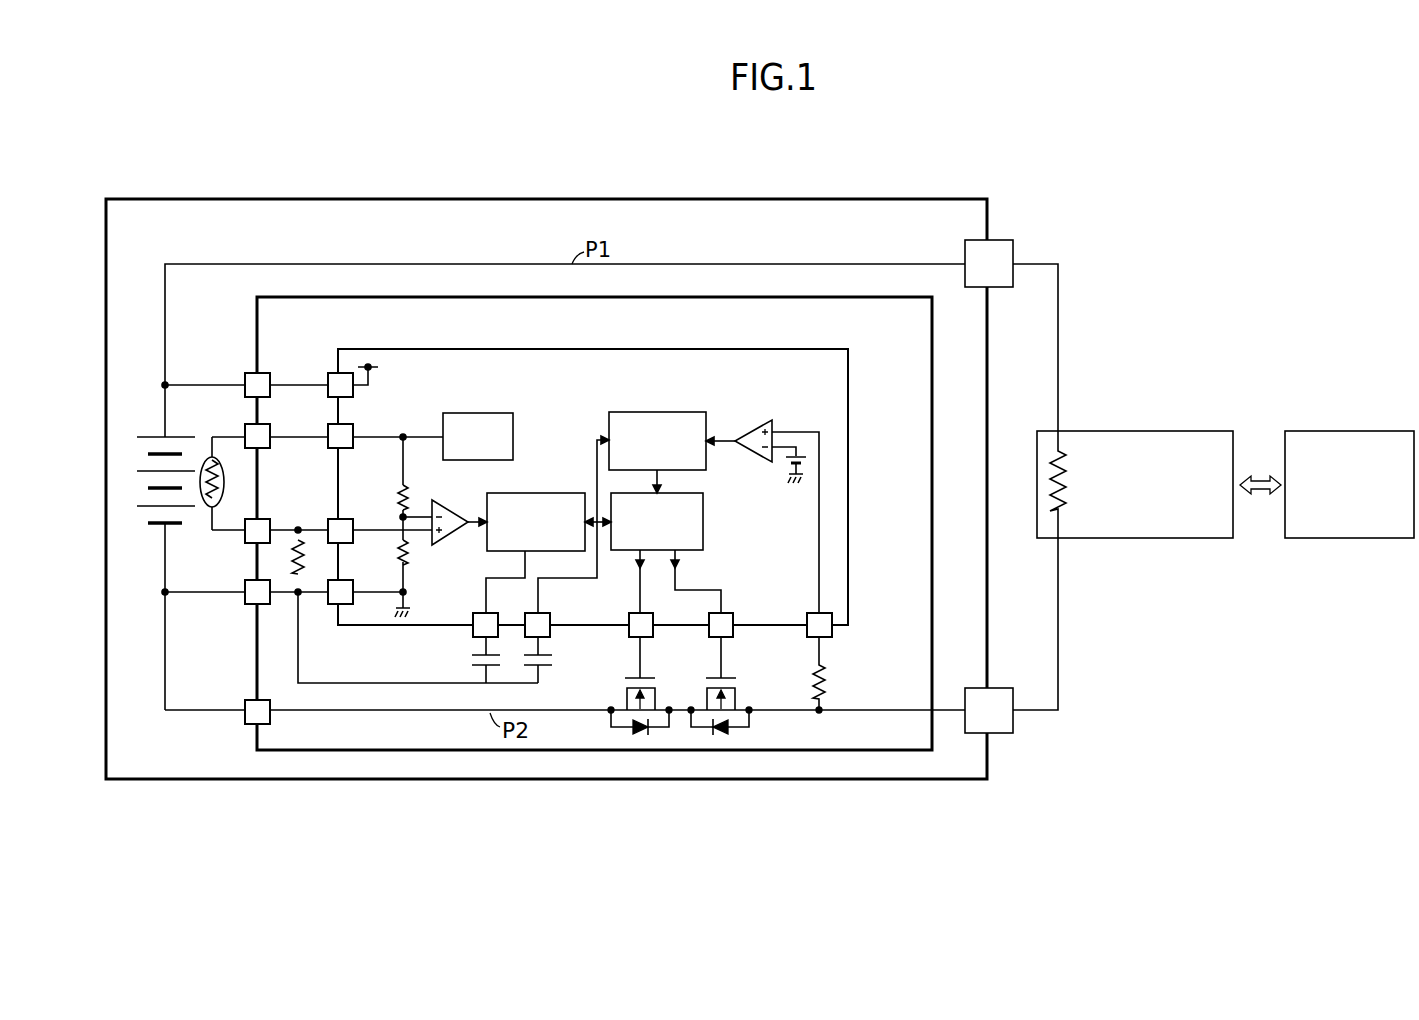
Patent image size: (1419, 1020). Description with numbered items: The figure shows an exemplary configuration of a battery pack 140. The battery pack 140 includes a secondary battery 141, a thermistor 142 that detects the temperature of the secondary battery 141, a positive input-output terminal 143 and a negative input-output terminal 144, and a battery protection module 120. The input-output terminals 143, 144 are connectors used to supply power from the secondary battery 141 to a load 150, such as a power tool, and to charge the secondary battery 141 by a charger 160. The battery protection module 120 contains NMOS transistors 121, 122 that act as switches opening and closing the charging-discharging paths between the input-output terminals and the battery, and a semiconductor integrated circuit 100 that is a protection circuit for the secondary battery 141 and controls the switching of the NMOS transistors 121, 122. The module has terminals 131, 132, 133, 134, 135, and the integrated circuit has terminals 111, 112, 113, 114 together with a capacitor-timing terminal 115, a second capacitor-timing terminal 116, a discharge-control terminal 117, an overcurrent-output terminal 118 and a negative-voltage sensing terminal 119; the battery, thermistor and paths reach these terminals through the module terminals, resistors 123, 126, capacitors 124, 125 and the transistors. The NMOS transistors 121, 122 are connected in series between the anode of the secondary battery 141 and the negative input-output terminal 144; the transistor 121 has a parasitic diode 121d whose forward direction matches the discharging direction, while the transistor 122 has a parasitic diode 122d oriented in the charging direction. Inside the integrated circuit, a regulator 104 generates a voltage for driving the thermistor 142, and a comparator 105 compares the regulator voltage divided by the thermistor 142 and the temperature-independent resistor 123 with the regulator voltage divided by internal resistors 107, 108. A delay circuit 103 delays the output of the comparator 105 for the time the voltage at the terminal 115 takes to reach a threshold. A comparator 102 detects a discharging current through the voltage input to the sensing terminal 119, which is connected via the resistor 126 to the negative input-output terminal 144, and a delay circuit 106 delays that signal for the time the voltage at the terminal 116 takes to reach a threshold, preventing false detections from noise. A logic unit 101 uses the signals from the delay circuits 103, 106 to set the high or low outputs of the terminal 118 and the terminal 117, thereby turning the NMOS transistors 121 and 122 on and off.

The semiconductor integrated circuit 100 is at (848, 387).
The logic unit 101 is at (705, 535).
The comparator 102 is at (774, 424).
The delay circuit 103 is at (527, 495).
The regulator 104 is at (472, 413).
The comparator 105 is at (453, 506).
The delay circuit 106 is at (644, 412).
The resistor 107 is at (406, 488).
The resistor 108 is at (410, 556).
The terminal 111 is at (328, 373).
The terminal 112 is at (328, 424).
The terminal 113 is at (328, 519).
The terminal 114 is at (328, 604).
The CTH terminal 115 is at (473, 631).
The CLD terminal 116 is at (550, 632).
The DCHG terminal 117 is at (629, 640).
The OV terminal 118 is at (709, 630).
The V− terminal 119 is at (807, 630).
The battery protection module 120 is at (932, 334).
The NMOS transistor 121 is at (736, 698).
The parasitic diode 121d is at (730, 728).
The NMOS transistor 122 is at (656, 698).
The parasitic diode 122d is at (632, 728).
The resistor 123 is at (291, 564).
The capacitor 124 is at (471, 660).
The capacitor 125 is at (552, 665).
The resistor 126 is at (827, 684).
The terminal 131 is at (245, 373).
The terminal 132 is at (245, 424).
The terminal 133 is at (245, 543).
The terminal 134 is at (245, 604).
The terminal 135 is at (245, 700).
The battery pack 140 is at (862, 199).
The secondary battery 141 is at (155, 435).
The thermistor 142 is at (225, 495).
The positive input-output terminal 143 is at (1000, 240).
The negative input-output terminal 144 is at (1000, 688).
The load 150 is at (1175, 431).
The charger 160 is at (1360, 431).